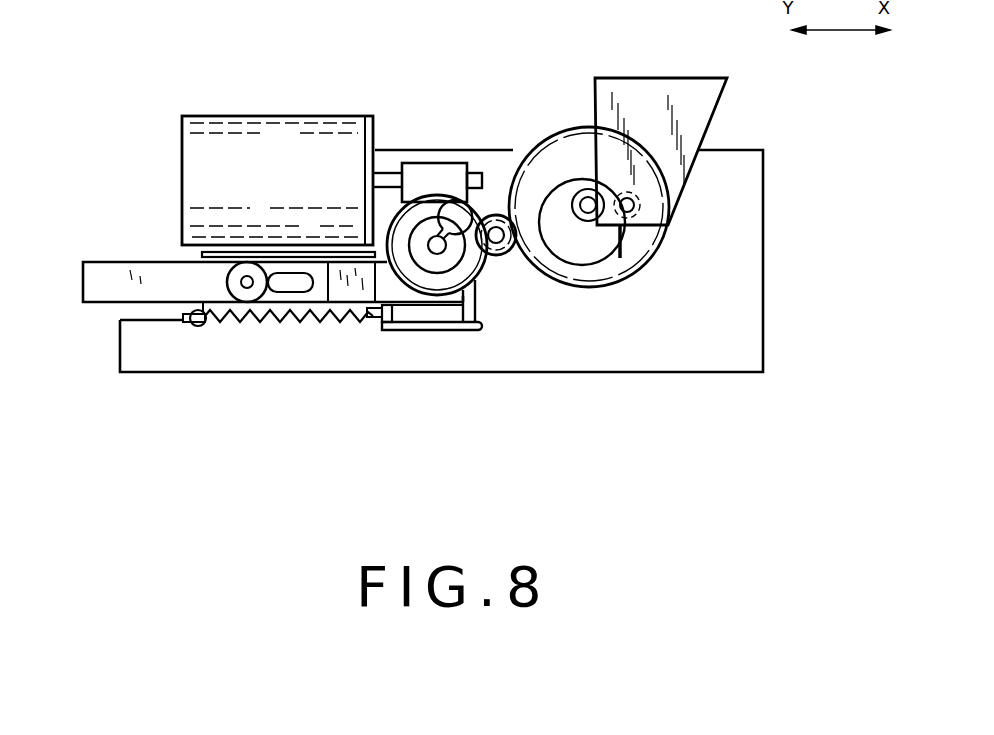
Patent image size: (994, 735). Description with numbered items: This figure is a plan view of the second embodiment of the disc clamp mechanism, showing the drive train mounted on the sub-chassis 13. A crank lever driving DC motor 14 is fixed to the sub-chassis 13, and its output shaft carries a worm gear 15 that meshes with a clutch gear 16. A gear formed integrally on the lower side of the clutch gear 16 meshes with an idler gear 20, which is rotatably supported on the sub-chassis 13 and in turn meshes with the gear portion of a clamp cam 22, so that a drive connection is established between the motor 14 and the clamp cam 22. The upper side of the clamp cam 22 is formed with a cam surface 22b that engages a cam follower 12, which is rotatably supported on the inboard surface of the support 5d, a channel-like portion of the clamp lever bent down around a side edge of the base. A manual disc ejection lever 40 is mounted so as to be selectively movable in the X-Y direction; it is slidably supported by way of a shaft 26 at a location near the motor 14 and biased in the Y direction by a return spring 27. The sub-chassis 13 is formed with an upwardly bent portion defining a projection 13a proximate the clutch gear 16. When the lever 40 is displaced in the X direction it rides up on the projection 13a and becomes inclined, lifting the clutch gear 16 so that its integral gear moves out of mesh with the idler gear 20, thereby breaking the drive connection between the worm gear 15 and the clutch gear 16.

The support 5d is at (700, 103).
The cam follower 12 is at (640, 207).
The sub-chassis 13 is at (610, 355).
The projection 13a is at (457, 305).
The crank lever driving DC motor 14 is at (280, 130).
The worm gear 15 is at (432, 165).
The clutch gear 16 is at (450, 195).
The idler gear 20 is at (498, 213).
The clamp cam 22 is at (585, 130).
The cam surface 22b is at (633, 253).
The shaft 26 is at (247, 290).
The return spring 27 is at (320, 323).
The manual disc ejection lever 40 is at (123, 287).